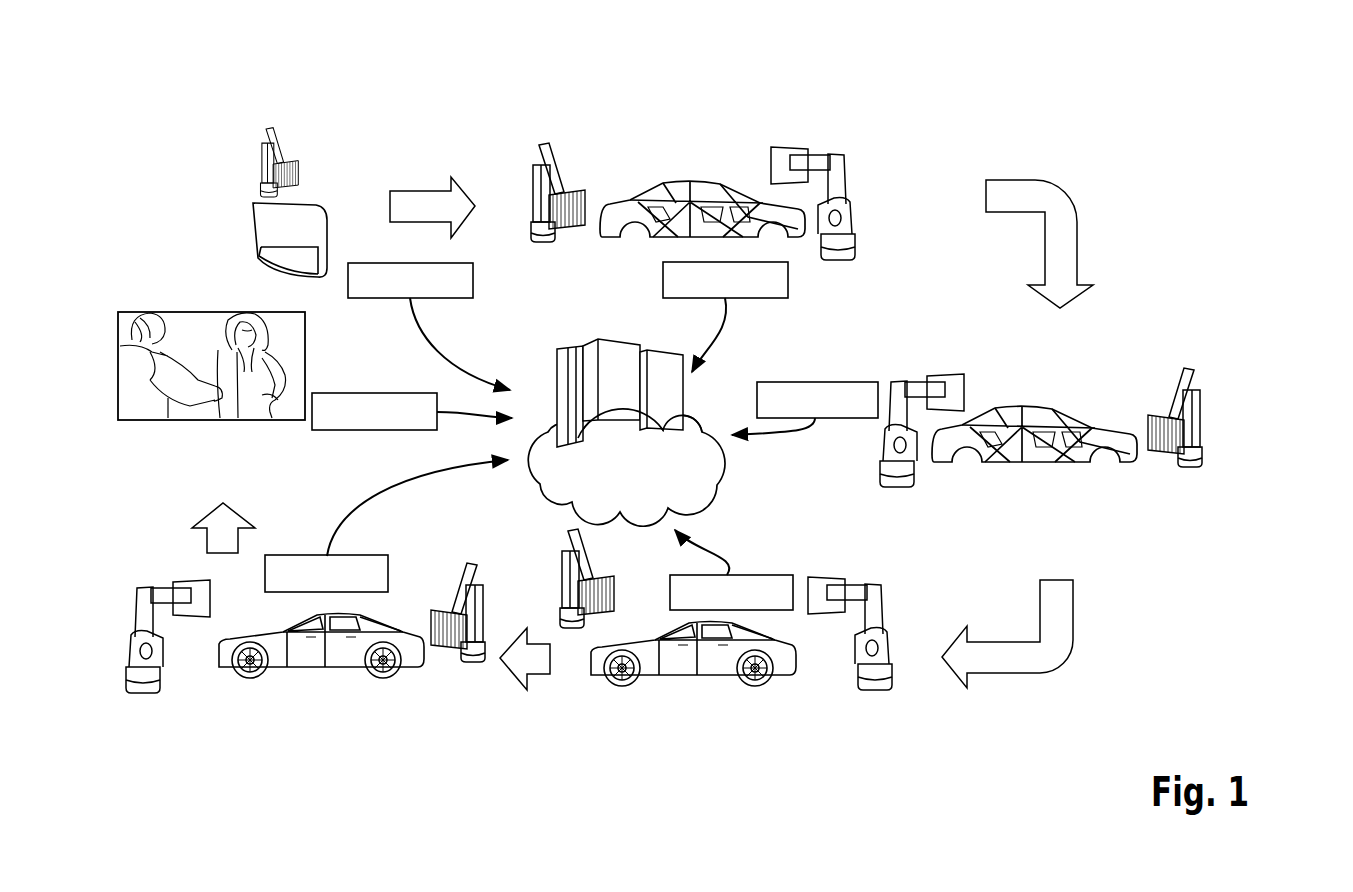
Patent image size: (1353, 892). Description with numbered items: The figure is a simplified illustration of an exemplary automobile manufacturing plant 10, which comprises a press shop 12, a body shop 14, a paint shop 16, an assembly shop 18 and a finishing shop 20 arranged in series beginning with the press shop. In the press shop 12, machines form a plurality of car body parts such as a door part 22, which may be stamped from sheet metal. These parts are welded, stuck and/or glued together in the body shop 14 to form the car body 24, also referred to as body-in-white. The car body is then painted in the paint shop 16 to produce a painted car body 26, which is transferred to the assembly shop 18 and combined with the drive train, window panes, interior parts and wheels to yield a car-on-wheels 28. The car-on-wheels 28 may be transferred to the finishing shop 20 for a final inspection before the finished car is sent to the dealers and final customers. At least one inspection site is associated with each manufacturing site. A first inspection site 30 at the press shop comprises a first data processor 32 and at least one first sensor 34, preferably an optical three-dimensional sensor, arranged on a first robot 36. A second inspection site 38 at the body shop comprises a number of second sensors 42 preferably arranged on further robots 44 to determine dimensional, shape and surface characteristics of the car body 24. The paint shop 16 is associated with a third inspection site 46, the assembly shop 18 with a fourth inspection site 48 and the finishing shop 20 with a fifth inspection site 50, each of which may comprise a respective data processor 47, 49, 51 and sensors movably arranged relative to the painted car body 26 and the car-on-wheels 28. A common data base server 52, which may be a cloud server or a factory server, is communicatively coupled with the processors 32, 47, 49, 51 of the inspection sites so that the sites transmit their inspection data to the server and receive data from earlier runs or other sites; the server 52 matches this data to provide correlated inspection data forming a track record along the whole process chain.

The automobile manufacturing plant 10 is at (1107, 128).
The press shop 12 is at (236, 148).
The body shop 14 is at (755, 140).
The paint shop 16 is at (1123, 372).
The assembly shop 18 is at (632, 735).
The finishing shop 20 is at (317, 732).
The door part 22 is at (260, 233).
The car body 24 is at (672, 184).
The painted car body 26 is at (1119, 461).
The car-on-wheels 28 is at (791, 666).
The first inspection site 30 is at (330, 148).
The first data processor 32 is at (475, 281).
The first sensor 34 is at (299, 176).
The first robot 36 is at (262, 172).
The second inspection site 38 is at (868, 160).
The second sensor 42 is at (568, 190).
The further robot 44 is at (535, 190).
The third inspection site 46 is at (1215, 392).
The data processor 47 is at (838, 419).
The fourth inspection site 48 is at (898, 584).
The data processor 49 is at (775, 575).
The fifth inspection site 50 is at (144, 707).
The data processor 51 is at (290, 555).
The common data base server 52 is at (729, 466).